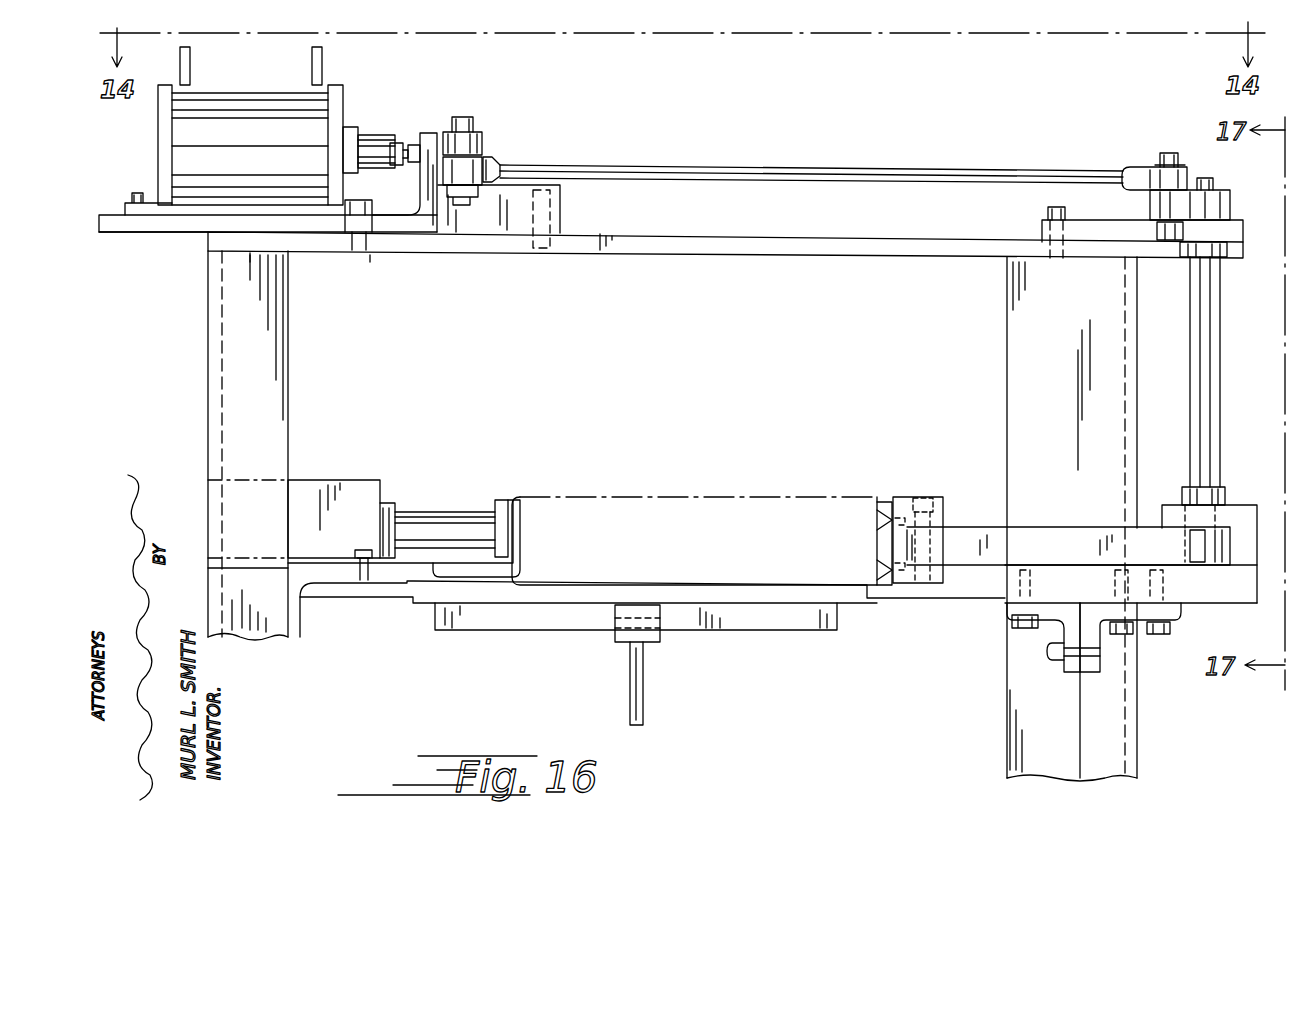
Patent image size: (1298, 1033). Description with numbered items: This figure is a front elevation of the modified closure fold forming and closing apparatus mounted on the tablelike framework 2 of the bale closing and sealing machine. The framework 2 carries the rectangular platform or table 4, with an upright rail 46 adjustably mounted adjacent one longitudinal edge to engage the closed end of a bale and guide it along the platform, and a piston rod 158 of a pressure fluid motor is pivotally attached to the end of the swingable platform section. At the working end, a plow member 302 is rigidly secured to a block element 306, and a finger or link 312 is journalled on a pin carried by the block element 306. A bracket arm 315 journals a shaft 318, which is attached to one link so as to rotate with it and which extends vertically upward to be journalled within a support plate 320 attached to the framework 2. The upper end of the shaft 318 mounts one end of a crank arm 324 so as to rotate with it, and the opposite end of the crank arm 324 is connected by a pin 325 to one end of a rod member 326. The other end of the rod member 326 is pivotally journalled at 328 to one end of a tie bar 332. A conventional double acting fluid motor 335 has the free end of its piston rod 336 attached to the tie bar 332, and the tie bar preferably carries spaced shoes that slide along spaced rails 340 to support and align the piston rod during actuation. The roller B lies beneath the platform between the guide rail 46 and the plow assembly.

The tablelike framework 2 is at (856, 258).
The rectangular platform or table 4 is at (722, 598).
The upright rail 46 is at (510, 500).
The piston rod 158 is at (648, 683).
The plow member 302 is at (885, 498).
The block element 306 is at (936, 498).
The finger or link 312 is at (1068, 545).
The bracket arm 315 is at (1240, 505).
The shaft 318 is at (1220, 342).
The support plate 320 is at (1130, 230).
The crank arm 324 is at (1232, 200).
The pin 325 is at (1172, 154).
The rod member 326 is at (832, 168).
The pivotal journal 328 is at (500, 160).
The tie bar 332 is at (484, 140).
The double acting fluid motor 335 is at (234, 131).
The piston rod 336 is at (392, 132).
The rail 340 is at (556, 208).
The roller B is at (790, 495).